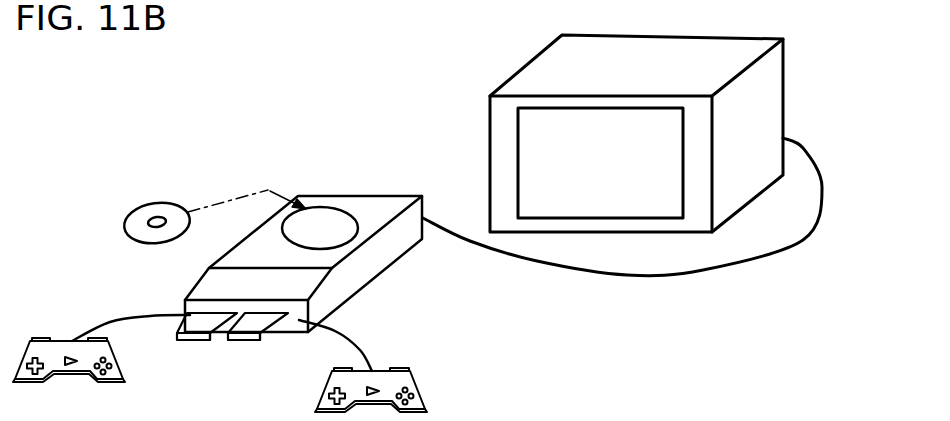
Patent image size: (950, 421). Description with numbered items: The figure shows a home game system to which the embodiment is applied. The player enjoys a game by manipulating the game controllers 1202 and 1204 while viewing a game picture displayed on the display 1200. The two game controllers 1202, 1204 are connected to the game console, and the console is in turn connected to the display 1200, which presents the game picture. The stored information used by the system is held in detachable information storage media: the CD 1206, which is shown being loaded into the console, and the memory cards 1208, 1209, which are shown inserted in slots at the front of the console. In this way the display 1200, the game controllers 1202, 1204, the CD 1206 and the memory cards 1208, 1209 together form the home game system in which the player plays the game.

The display 1200 is at (535, 144).
The game controller 1202 is at (62, 340).
The game controller 1204 is at (383, 369).
The CD 1206 is at (160, 202).
The memory card 1208 is at (185, 338).
The memory card 1209 is at (253, 338).